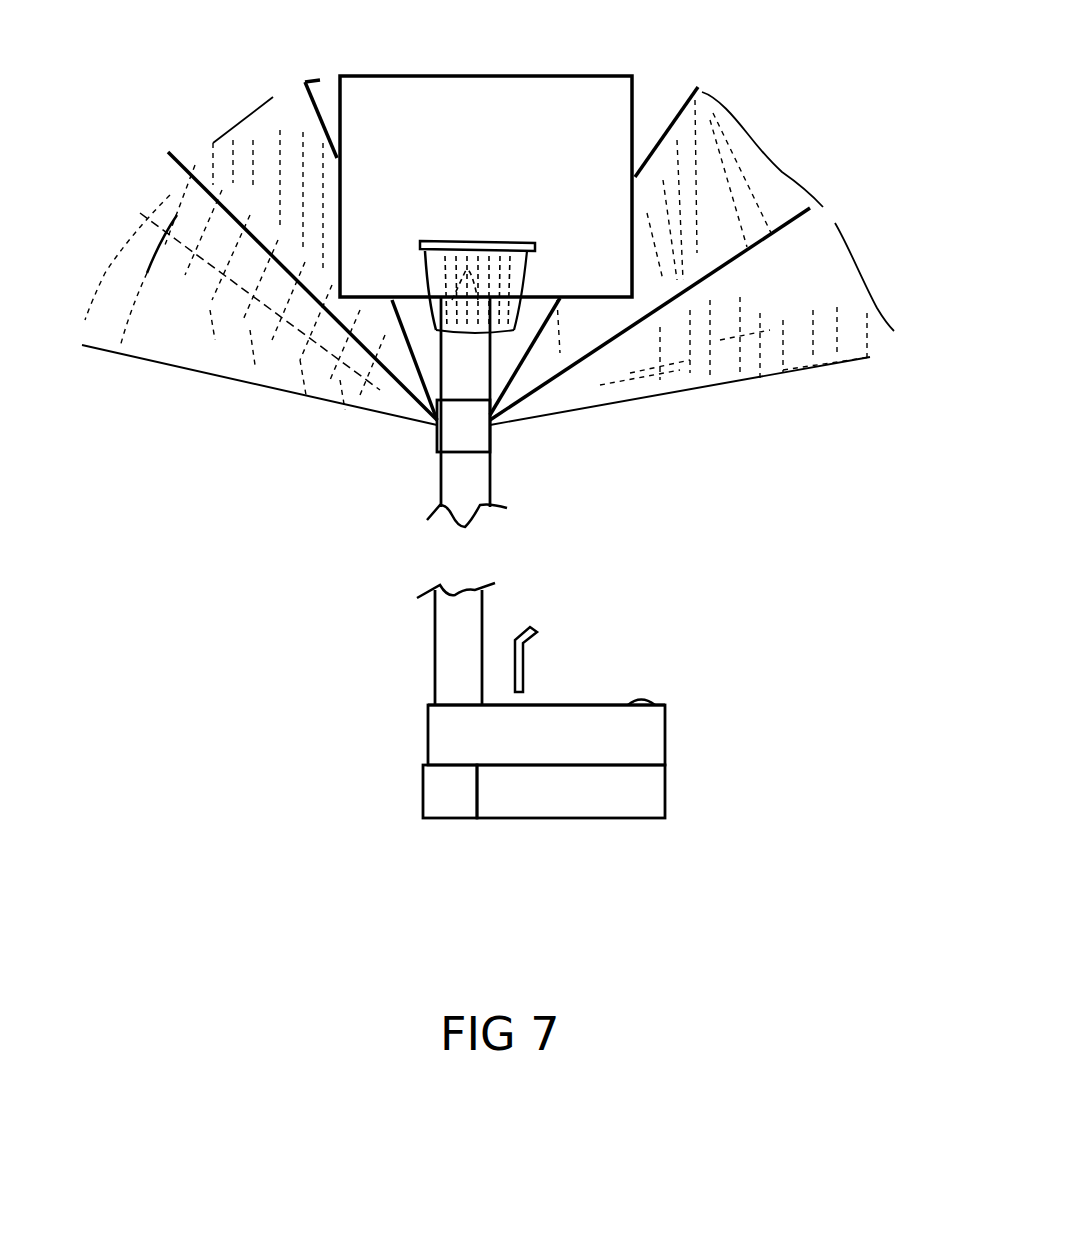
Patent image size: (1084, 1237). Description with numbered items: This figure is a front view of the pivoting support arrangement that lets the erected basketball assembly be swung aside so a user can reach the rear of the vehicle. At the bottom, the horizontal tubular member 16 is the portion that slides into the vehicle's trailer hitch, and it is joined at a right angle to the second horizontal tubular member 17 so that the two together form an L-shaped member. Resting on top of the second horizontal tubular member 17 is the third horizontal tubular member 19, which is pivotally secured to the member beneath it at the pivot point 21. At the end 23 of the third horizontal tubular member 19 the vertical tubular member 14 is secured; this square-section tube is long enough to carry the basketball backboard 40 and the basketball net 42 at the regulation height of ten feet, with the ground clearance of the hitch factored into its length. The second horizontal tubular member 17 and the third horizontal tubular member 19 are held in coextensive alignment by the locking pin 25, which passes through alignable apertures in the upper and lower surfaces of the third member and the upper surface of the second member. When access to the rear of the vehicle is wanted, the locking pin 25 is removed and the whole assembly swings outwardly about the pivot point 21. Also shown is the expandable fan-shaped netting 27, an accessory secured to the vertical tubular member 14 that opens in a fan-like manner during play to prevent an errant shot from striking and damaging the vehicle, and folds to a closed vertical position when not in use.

The vertical tubular member 14 is at (435, 625).
The horizontal tubular member 16 is at (423, 797).
The second horizontal tubular member 17 is at (582, 795).
The third horizontal tubular member 19 is at (568, 715).
The pivot point 21 is at (642, 697).
The end of horizontal tubular member 23 is at (428, 733).
The locking pin 25 is at (538, 618).
The expandable fan-shaped netting 27 is at (793, 177).
The basketball backboard 40 is at (592, 103).
The basketball net 42 is at (507, 242).